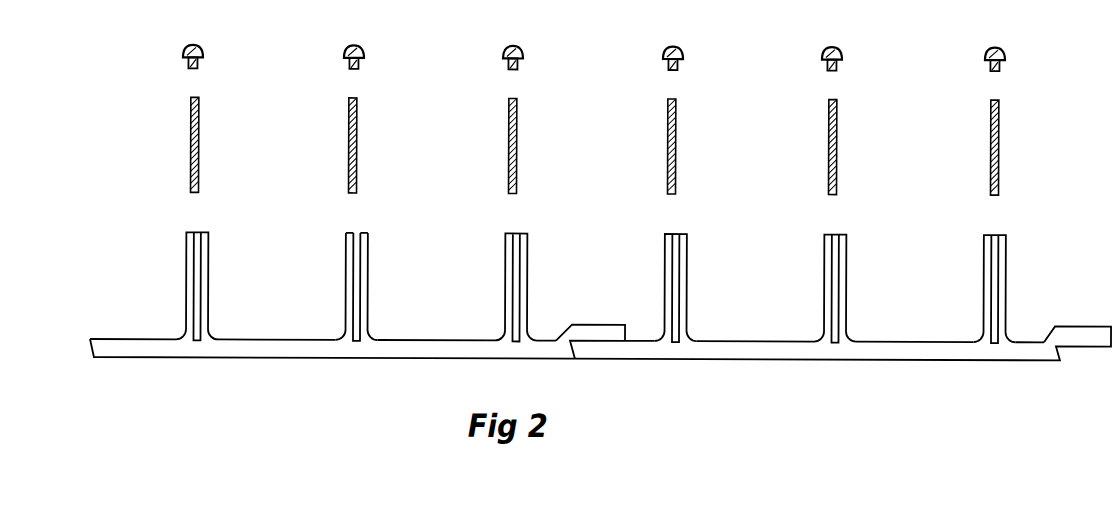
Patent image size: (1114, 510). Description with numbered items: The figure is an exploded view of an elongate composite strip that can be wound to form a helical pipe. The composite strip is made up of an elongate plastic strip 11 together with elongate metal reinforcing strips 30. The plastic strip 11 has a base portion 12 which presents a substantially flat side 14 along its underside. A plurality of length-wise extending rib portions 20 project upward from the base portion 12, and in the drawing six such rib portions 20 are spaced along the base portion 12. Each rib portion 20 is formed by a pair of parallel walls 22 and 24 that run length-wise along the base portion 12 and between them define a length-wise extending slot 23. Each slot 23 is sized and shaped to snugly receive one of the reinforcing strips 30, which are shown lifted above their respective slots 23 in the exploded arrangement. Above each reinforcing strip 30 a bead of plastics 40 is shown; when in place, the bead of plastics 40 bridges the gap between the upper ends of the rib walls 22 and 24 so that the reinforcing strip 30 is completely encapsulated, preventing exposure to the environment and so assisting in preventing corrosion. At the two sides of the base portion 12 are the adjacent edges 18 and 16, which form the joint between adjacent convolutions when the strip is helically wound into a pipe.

The plastic strip 11 is at (168, 296).
The base portion 12 is at (140, 347).
The flat side 14 is at (273, 347).
The edge 16 is at (598, 346).
The edge 18 is at (601, 326).
The rib portion 20 is at (216, 249).
The wall 22 is at (345, 287).
The slot 23 is at (352, 227).
The wall 24 is at (370, 289).
The reinforcing strip 30 is at (190, 152).
The bead of plastics 40 is at (184, 46).